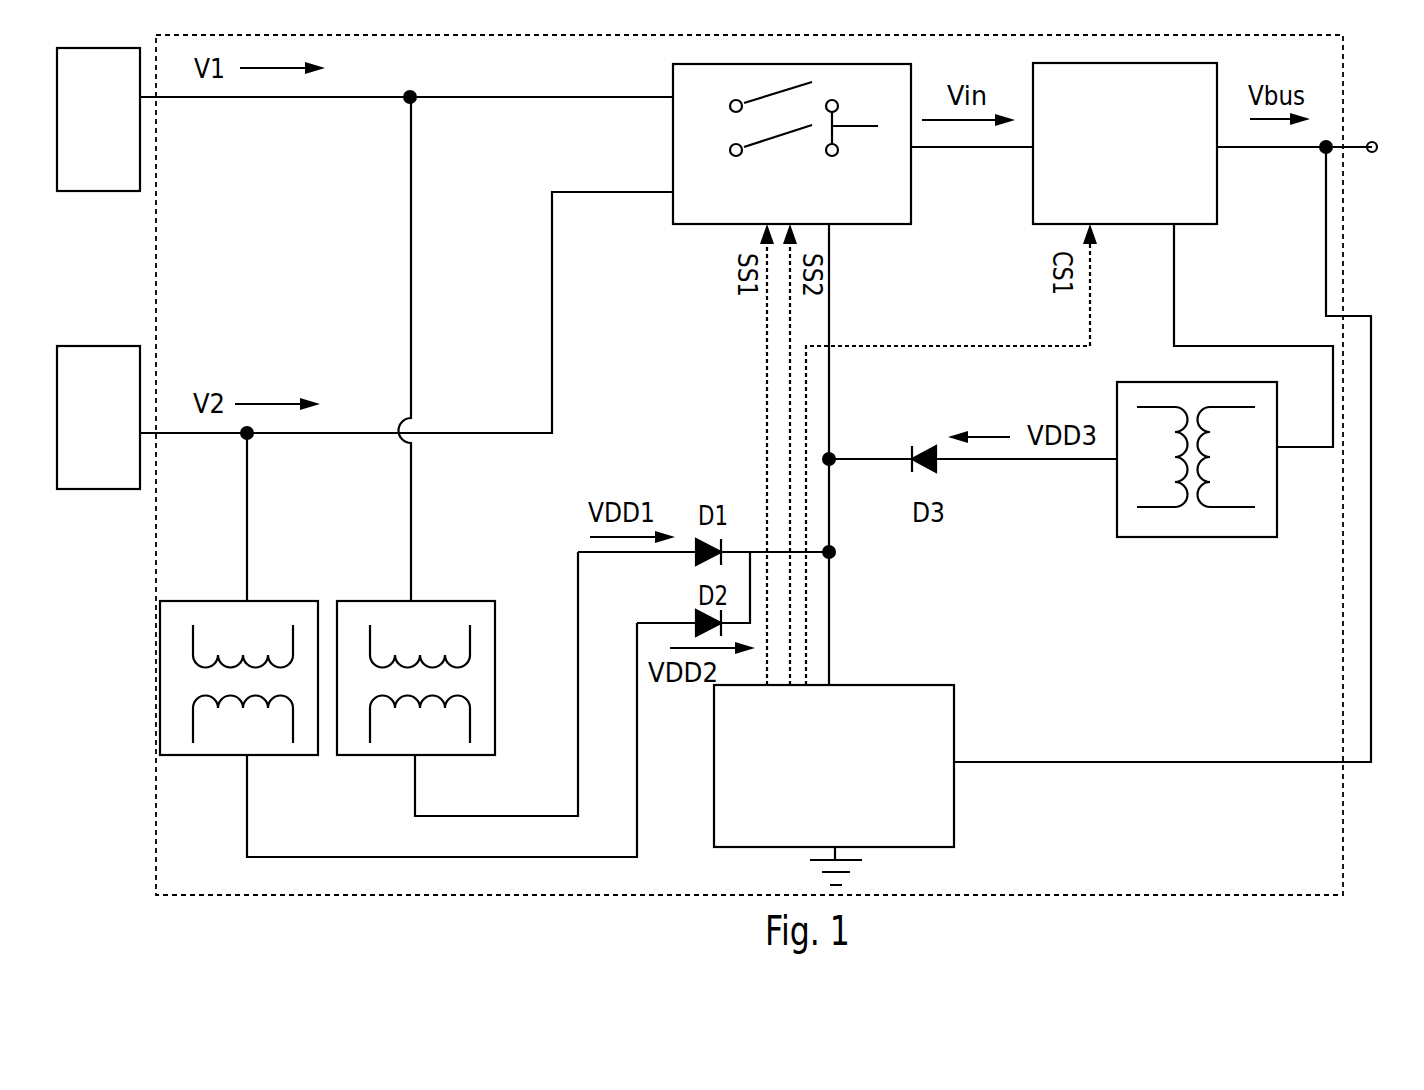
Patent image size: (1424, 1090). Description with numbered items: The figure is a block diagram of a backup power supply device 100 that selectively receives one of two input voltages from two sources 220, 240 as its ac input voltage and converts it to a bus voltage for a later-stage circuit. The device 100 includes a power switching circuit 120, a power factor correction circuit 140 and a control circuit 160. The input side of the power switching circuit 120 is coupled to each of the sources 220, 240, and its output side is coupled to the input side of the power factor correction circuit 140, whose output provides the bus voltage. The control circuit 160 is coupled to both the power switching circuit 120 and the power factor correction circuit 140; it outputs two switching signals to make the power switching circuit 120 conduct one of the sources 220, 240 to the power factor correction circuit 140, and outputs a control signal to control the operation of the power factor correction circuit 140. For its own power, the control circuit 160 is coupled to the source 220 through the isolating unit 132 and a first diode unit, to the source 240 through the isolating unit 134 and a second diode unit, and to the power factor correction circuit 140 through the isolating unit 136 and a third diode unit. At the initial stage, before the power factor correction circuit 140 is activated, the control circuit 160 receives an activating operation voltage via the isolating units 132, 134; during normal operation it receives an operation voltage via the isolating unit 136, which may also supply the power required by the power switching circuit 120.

The backup power supply device 100 is at (1345, 832).
The power switching circuit 120 is at (684, 224).
The power factor correction circuit 140 is at (1125, 143).
The control circuit 160 is at (834, 766).
The isolating unit 132 is at (463, 600).
The isolating unit 134 is at (286, 600).
The isolating unit 136 is at (1228, 537).
The source 220 is at (98, 119).
The source 240 is at (98, 417).